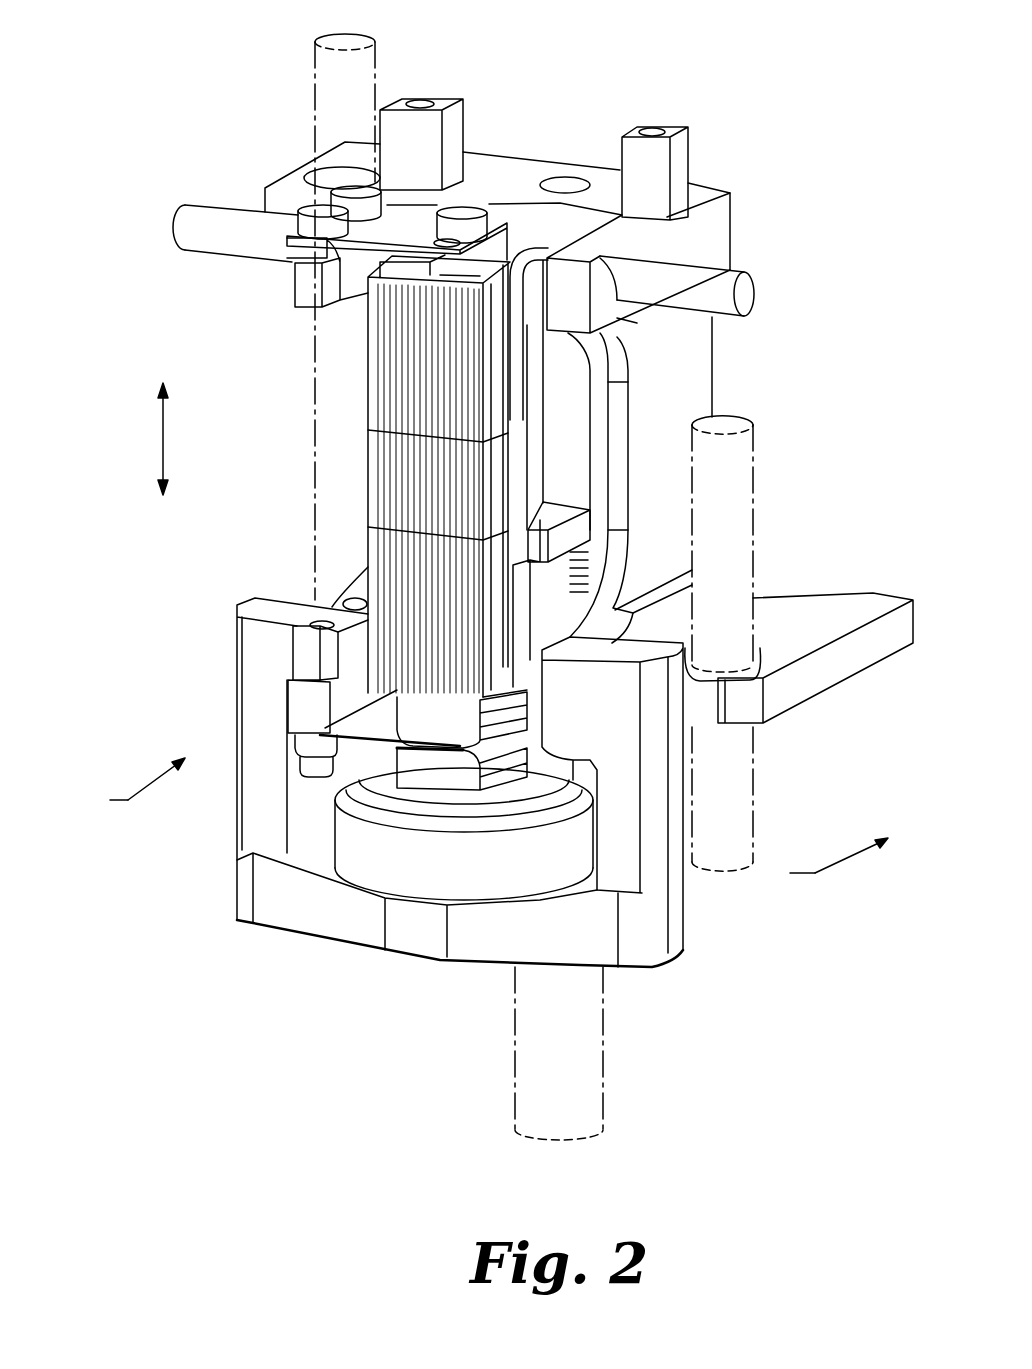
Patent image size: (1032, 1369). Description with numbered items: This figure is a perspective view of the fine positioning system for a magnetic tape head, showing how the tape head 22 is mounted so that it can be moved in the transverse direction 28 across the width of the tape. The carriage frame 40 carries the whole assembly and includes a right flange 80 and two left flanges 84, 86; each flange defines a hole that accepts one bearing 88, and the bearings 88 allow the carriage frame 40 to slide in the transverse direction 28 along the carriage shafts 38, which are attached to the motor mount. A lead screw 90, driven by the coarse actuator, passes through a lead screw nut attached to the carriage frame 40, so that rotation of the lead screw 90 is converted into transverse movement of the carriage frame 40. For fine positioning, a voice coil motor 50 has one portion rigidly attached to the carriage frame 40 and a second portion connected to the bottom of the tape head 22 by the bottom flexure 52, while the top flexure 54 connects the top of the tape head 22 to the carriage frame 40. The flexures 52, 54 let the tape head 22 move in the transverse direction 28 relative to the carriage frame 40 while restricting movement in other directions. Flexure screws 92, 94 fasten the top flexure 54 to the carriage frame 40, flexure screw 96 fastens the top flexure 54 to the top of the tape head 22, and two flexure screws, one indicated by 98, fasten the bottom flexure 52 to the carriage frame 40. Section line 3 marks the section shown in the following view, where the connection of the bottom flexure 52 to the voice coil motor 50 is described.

The tape head 22 is at (370, 398).
The transverse direction 28 is at (163, 450).
The carriage shaft 38 is at (375, 68).
The carriage frame 40 is at (737, 223).
The voice coil motor 50 is at (357, 860).
The bottom flexure 52 is at (345, 742).
The top flexure 54 is at (410, 222).
The right flange 80 is at (810, 700).
The left flange 84 is at (265, 188).
The left flange 86 is at (315, 560).
The bearing 88 is at (308, 180).
The lead screw 90 is at (603, 1092).
The flexure screw 92 is at (357, 190).
The flexure screw 94 is at (292, 222).
The flexure screw 96 is at (465, 208).
The flexure screw 98 is at (303, 752).
The section line 3- 3 is at (513, 799).